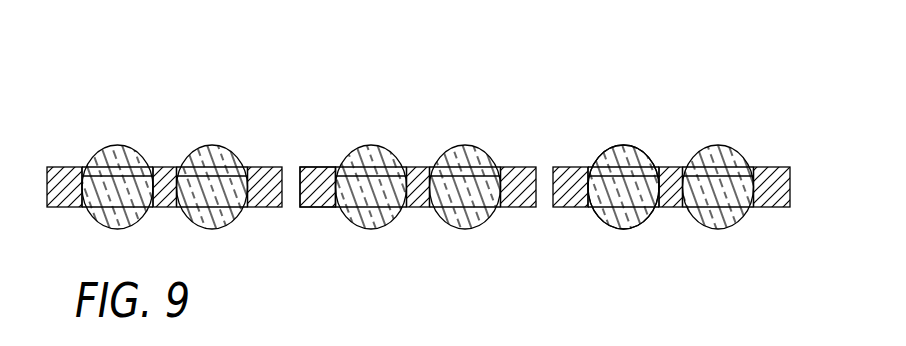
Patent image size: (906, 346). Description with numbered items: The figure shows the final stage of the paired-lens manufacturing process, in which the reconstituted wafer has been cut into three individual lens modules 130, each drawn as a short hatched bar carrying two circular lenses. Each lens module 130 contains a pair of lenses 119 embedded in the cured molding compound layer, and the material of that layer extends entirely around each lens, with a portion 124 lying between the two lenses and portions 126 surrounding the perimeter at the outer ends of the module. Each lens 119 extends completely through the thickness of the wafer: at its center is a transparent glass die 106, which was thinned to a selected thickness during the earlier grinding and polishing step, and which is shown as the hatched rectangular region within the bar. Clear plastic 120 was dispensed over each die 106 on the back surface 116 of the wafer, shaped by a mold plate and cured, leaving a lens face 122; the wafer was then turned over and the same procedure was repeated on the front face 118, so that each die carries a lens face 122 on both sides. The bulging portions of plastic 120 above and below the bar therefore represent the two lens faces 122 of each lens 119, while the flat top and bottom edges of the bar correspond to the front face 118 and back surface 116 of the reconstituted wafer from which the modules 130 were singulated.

The glass die 106 is at (493, 192).
The back surface 116 is at (262, 212).
The front face 118 is at (313, 161).
The lens 119 is at (604, 135).
The clear plastic 120 is at (378, 226).
The lens face 122 is at (462, 145).
The portion between the lenses 124 is at (412, 171).
The perimeter portion 126 is at (63, 168).
The lens module 130 is at (181, 121).